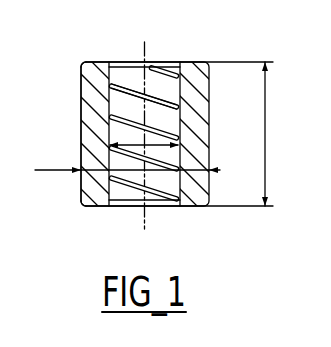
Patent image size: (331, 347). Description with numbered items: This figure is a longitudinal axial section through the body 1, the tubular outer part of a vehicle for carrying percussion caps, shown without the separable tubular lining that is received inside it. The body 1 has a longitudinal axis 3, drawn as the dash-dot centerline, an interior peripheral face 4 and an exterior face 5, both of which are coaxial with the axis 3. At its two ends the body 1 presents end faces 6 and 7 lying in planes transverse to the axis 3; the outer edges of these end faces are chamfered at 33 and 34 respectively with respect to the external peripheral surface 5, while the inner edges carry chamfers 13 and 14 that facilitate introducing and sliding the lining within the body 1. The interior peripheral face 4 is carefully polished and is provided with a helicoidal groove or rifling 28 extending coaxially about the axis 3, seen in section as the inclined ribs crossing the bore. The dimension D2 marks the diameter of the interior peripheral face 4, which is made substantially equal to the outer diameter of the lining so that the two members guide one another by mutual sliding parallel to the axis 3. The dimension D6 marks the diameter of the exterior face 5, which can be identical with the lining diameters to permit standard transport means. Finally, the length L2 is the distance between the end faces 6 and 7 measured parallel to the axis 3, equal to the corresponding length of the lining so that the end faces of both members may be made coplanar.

The body 1 is at (196, 126).
The longitudinal axis 3 is at (148, 43).
The interior peripheral face 4 is at (113, 80).
The exterior face 5 is at (81, 78).
The end face 6 is at (193, 62).
The end face 7 is at (195, 207).
The chamfer 13 is at (175, 62).
The chamfer 14 is at (154, 201).
The helicoidal groove or rifling 28 is at (128, 87).
The chamfer 33 is at (83, 62).
The chamfer 34 is at (82, 207).
The diameter of external peripheral face D6 is at (127, 160).
The diameter of interior peripheral face D2 is at (145, 137).
The distance between end faces of body L2 is at (277, 134).